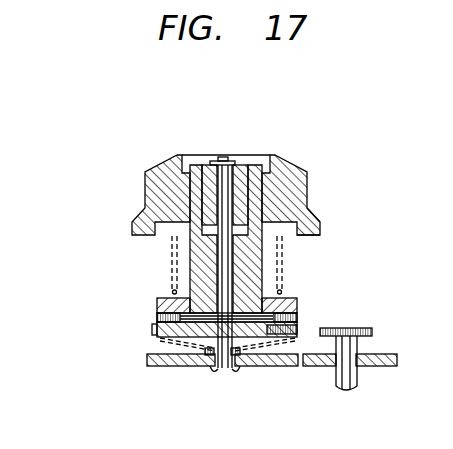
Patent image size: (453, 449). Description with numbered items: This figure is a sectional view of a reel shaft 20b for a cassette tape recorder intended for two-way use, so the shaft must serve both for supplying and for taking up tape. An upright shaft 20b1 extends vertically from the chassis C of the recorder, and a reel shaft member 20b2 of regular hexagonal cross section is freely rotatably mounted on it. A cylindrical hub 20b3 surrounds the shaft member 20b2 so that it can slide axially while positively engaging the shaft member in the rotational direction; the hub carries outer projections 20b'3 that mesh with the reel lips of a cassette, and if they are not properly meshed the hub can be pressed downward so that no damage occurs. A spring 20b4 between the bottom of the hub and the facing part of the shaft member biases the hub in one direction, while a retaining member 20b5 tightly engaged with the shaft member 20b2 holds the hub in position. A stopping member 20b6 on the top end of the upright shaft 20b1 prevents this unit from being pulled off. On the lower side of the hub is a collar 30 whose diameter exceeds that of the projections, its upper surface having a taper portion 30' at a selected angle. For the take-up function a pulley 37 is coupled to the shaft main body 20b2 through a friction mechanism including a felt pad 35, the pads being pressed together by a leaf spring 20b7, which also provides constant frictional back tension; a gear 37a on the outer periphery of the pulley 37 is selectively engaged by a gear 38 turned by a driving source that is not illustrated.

The reel shaft 20b is at (216, 250).
The upright shaft 20b1 is at (229, 372).
The reel shaft member 20b2 is at (262, 270).
The cylindrical hub 20b3 is at (287, 168).
The outer projections of the cylindrical hub 20b'3 is at (121, 195).
The spring 20b4 is at (171, 290).
The retaining member 20b5 is at (202, 165).
The stopping member 20b6 is at (243, 158).
The leaf spring 20b7 is at (183, 345).
The collar 30 is at (338, 236).
The taper portion 30' is at (344, 206).
The felt pad 35 is at (157, 310).
The pulley 37 is at (156, 320).
The gear 37a is at (297, 330).
The gear 38 is at (372, 331).
The chassis C is at (180, 366).